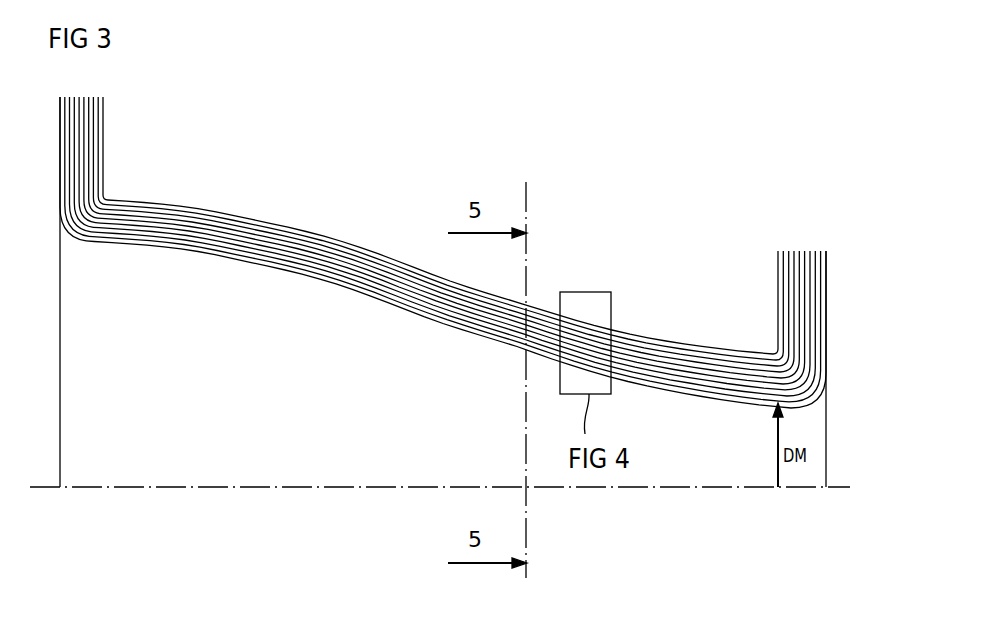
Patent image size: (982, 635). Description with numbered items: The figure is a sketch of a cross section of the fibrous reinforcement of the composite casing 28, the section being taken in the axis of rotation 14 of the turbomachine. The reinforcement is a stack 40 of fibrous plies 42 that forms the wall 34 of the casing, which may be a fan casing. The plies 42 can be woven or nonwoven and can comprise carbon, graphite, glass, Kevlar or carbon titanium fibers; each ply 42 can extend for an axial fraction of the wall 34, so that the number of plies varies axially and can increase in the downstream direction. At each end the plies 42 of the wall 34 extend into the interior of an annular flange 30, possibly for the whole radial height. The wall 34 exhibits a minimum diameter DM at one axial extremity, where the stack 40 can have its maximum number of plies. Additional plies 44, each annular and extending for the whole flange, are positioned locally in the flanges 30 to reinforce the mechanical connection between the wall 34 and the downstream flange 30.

The composite casing 28 is at (624, 135).
The annular flange 30 is at (116, 141).
The wall 34 is at (430, 158).
The stack 40 is at (436, 359).
The fibrous ply 42 is at (283, 230).
The additional ply 44 is at (182, 221).
The axis of rotation 14 is at (372, 490).